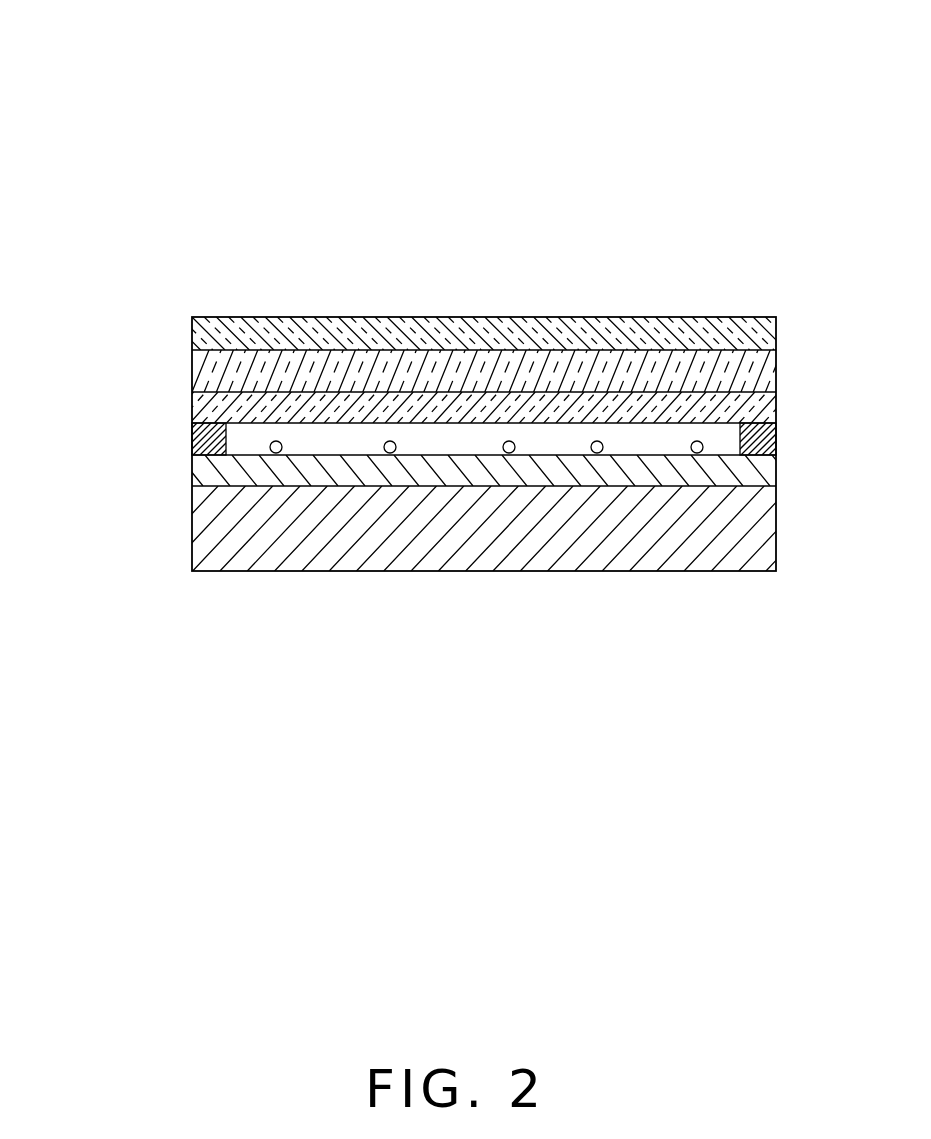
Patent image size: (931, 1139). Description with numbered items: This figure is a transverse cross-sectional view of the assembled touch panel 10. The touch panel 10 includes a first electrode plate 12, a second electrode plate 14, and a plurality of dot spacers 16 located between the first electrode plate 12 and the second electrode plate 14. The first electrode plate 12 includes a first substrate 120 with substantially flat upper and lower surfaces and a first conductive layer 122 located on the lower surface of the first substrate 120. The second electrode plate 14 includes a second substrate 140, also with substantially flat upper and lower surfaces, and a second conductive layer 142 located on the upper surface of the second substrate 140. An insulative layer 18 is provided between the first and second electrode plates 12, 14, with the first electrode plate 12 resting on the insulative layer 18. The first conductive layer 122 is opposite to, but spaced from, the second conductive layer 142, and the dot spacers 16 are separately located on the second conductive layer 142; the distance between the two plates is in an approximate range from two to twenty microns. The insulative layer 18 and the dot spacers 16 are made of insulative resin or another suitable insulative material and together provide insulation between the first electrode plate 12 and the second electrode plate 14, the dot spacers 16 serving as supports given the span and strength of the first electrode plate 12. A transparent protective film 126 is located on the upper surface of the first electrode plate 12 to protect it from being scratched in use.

The touch panel 10 is at (469, 46).
The first electrode plate 12 is at (74, 350).
The first substrate 120 is at (203, 373).
The first conductive layer 122 is at (207, 404).
The transparent protective film 126 is at (213, 338).
The second electrode plate 14 is at (75, 457).
The second substrate 140 is at (215, 546).
The second conductive layer 142 is at (202, 468).
The dot spacers 16 is at (268, 450).
The insulative layer 18 is at (765, 432).